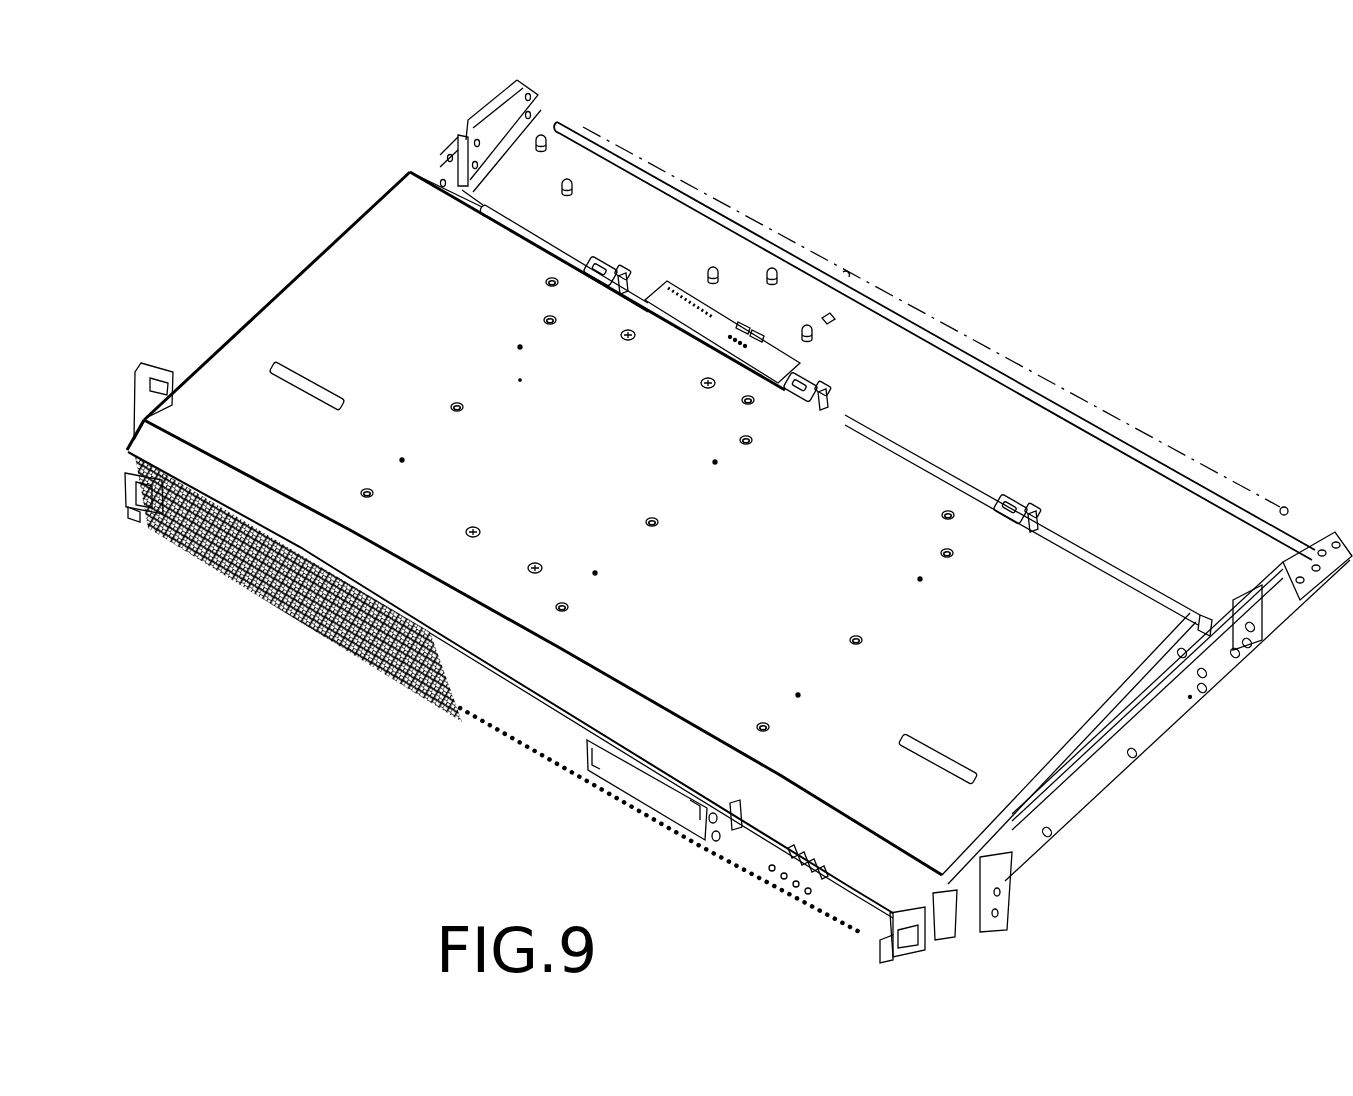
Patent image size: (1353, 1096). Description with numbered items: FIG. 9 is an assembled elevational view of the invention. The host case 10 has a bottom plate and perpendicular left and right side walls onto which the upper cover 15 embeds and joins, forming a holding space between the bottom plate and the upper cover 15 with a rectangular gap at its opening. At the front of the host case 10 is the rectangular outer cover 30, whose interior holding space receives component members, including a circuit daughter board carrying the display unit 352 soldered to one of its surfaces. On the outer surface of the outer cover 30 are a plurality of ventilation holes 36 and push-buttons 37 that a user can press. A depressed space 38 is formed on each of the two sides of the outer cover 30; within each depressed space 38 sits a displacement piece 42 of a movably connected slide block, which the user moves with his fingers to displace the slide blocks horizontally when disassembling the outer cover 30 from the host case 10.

The host case 10 is at (950, 298).
The upper cover 15 is at (350, 243).
The outer cover 30 is at (157, 440).
The ventilation holes 36 is at (313, 613).
The push-buttons 37 is at (787, 877).
The depressed space 38 is at (148, 515).
The displacement piece 42 is at (128, 492).
The display unit 352 is at (652, 792).